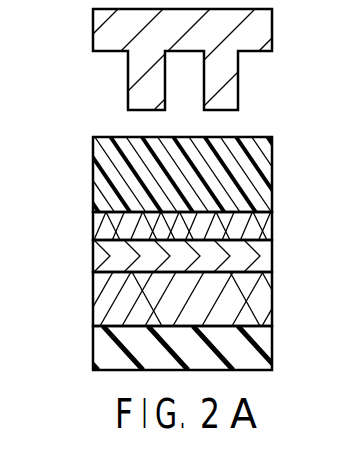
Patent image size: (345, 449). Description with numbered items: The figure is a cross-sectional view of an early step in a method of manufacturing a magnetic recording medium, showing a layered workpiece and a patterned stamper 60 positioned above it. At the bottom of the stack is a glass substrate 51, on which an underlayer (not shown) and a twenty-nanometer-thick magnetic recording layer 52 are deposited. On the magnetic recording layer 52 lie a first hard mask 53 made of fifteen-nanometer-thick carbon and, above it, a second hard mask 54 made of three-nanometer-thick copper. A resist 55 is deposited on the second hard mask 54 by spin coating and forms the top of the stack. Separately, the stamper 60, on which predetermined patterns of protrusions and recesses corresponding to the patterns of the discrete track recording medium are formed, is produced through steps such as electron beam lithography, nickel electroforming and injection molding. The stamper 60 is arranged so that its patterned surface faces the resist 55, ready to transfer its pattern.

The stamper 60 is at (93, 33).
The resist 55 is at (93, 177).
The second hard mask 54 is at (93, 229).
The first hard mask 53 is at (93, 259).
The magnetic recording layer 52 is at (93, 302).
The glass substrate 51 is at (93, 352).